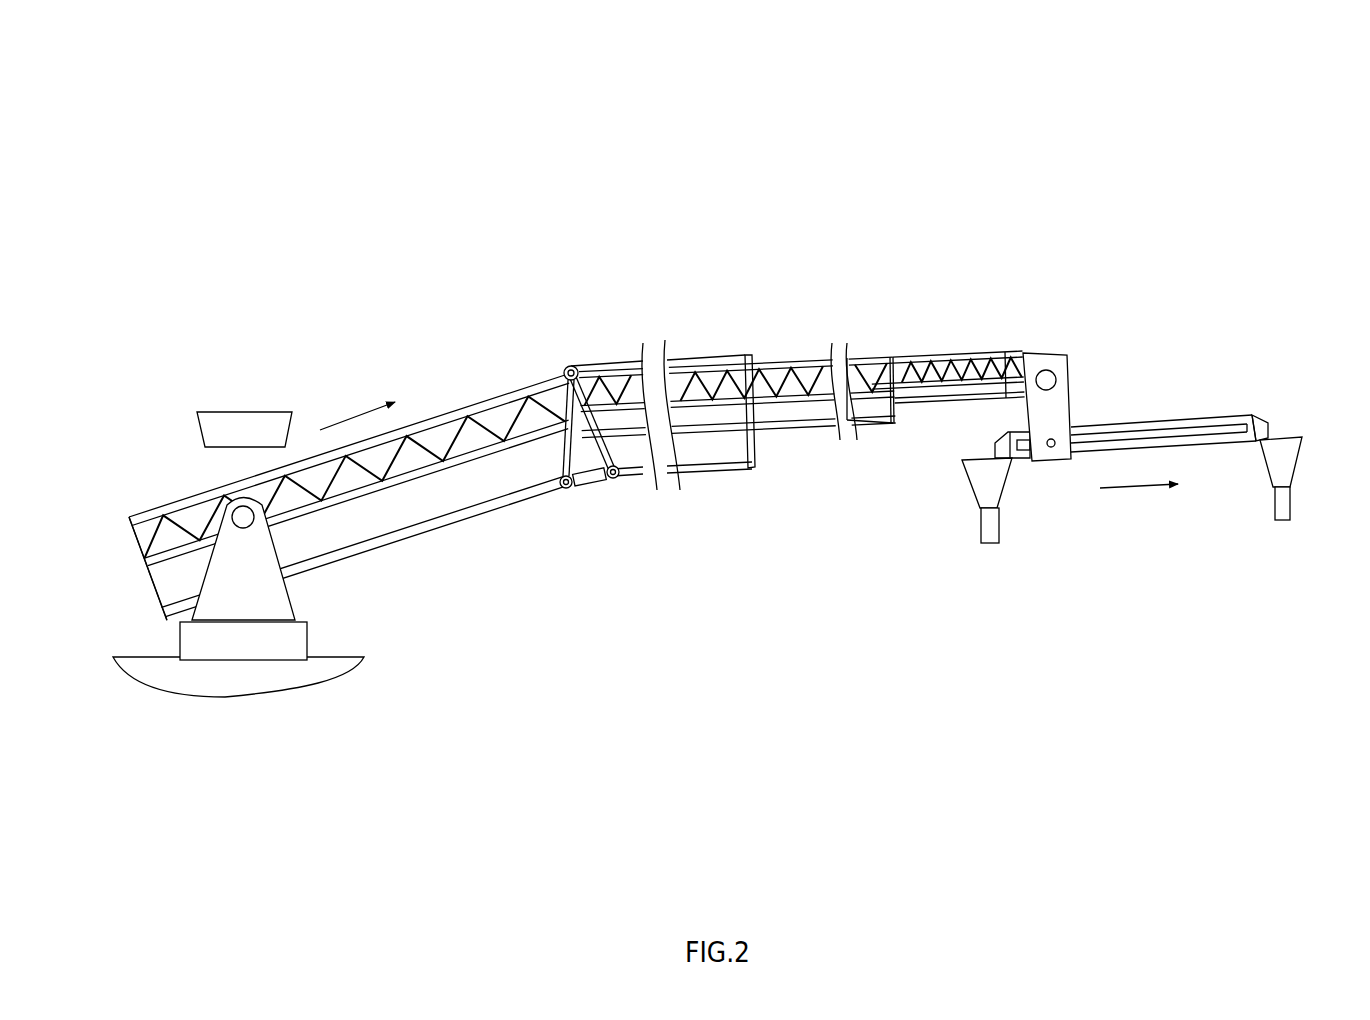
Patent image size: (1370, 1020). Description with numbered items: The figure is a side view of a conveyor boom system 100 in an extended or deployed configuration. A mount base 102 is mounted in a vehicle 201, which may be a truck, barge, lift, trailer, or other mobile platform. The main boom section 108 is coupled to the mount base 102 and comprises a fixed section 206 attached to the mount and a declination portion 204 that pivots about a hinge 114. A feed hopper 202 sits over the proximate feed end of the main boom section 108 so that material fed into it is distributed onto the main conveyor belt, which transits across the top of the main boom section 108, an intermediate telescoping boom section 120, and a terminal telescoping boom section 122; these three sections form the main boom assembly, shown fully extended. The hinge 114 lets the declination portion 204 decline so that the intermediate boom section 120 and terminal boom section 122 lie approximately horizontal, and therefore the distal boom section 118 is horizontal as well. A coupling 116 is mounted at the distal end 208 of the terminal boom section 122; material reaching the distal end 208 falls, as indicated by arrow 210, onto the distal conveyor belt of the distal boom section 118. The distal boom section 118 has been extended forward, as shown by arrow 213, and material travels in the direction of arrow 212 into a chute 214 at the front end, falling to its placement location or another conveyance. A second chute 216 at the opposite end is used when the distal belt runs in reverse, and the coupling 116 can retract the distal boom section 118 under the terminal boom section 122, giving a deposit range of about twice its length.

The conveyor boom system 100 is at (1213, 62).
The mount base 102 is at (307, 640).
The main boom section 108 is at (440, 358).
The hinge 114 is at (575, 362).
The coupling 116 is at (1085, 362).
The distal boom section 118 is at (1197, 447).
The intermediate telescoping boom section 120 is at (785, 362).
The terminal telescoping boom section 122 is at (920, 355).
The vehicle 201 is at (325, 690).
The feed hopper 202 is at (248, 398).
The declination portion 204 is at (605, 362).
The fixed section 206 is at (180, 495).
The distal end 208 is at (1005, 355).
The arrow 210 is at (1044, 351).
The arrow 212 is at (1278, 434).
The arrow 213 is at (1132, 487).
The chute 214 is at (1297, 462).
The chute 216 is at (965, 468).